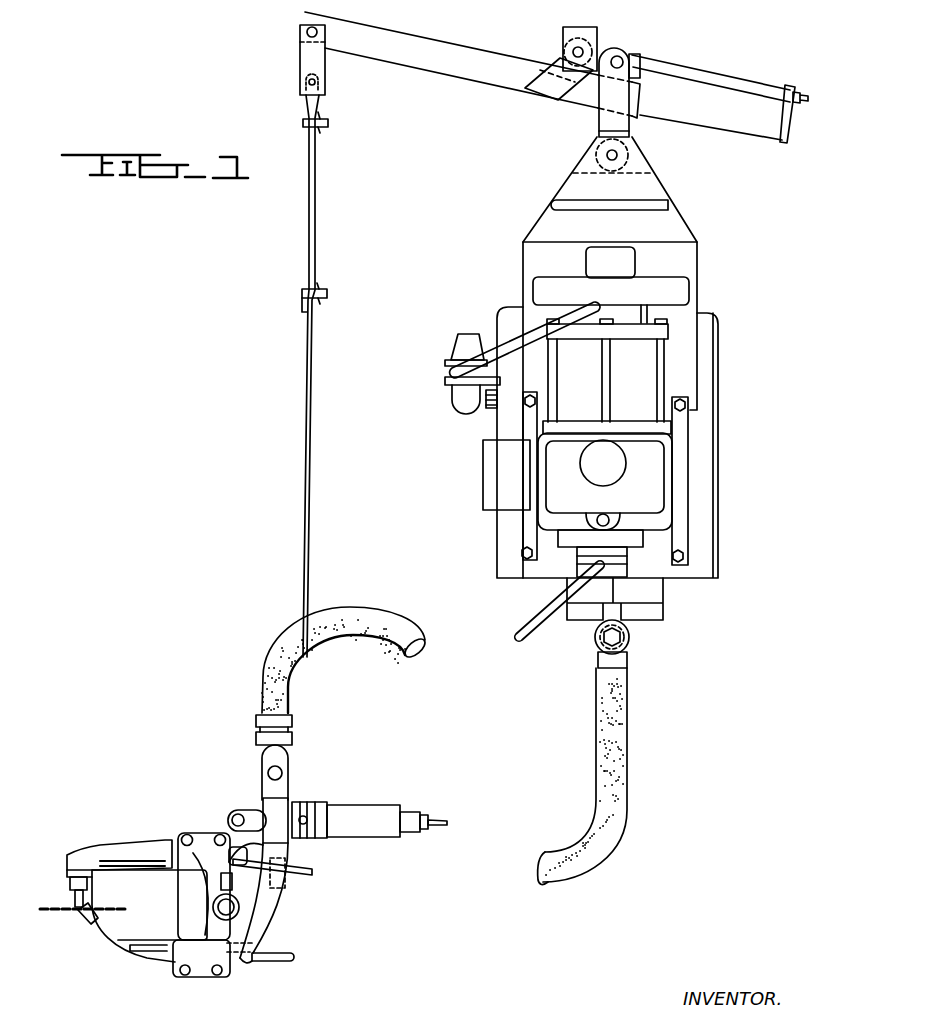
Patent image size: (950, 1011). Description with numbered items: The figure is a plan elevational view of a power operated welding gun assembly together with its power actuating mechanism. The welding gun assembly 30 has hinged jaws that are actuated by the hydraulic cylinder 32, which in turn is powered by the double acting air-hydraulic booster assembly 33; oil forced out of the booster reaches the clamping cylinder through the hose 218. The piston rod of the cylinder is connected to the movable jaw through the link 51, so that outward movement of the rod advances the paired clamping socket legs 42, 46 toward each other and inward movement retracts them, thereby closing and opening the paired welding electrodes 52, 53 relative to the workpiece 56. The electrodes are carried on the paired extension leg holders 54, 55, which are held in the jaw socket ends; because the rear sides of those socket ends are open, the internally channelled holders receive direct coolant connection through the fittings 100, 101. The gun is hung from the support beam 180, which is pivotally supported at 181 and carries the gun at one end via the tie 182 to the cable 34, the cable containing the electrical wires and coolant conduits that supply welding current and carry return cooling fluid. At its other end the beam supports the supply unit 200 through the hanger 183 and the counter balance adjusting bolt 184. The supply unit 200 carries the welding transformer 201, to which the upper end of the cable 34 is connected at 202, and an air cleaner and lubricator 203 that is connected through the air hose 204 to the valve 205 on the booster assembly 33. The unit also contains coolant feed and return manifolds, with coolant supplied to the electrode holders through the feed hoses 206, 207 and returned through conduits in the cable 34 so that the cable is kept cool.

The welding gun assembly 30 is at (151, 907).
The hydraulic cylinder 32 is at (382, 814).
The air-hydraulic booster assembly 33 is at (683, 377).
The cable 34 is at (638, 772).
The clamping socket leg 42 is at (184, 944).
The clamping socket leg 46 is at (196, 856).
The link 51 is at (258, 812).
The welding electrode 52 is at (72, 891).
The welding electrode 53 is at (78, 907).
The extension leg holder 54 is at (112, 850).
The extension leg holder 55 is at (153, 963).
The workpiece 56 is at (103, 906).
The fitting 100 is at (230, 836).
The fitting 101 is at (256, 963).
The support beam 180 is at (510, 60).
The pivot 181 is at (585, 52).
The tie 182 is at (312, 431).
The hanger 183 is at (605, 124).
The counter balance adjusting bolt 184 is at (692, 74).
The supply unit 200 is at (709, 288).
The welding transformer 201 is at (719, 350).
The cable connection 202 is at (622, 640).
The air cleaner and lubricator 203 is at (462, 353).
The air hose 204 is at (500, 340).
The valve 205 is at (640, 281).
The feed hose 206 is at (304, 876).
The feed hose 207 is at (296, 960).
The hose 218 is at (521, 641).